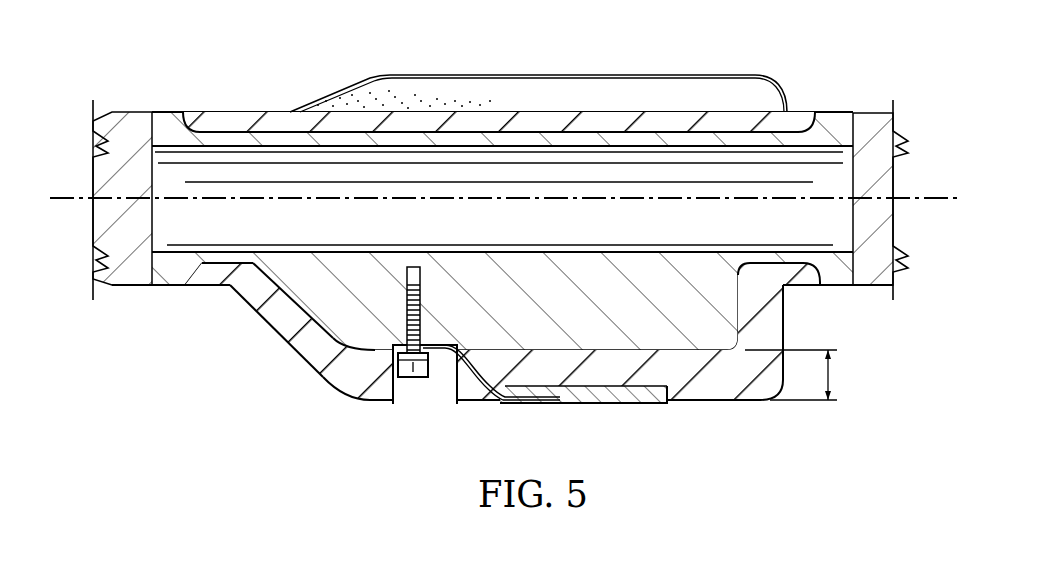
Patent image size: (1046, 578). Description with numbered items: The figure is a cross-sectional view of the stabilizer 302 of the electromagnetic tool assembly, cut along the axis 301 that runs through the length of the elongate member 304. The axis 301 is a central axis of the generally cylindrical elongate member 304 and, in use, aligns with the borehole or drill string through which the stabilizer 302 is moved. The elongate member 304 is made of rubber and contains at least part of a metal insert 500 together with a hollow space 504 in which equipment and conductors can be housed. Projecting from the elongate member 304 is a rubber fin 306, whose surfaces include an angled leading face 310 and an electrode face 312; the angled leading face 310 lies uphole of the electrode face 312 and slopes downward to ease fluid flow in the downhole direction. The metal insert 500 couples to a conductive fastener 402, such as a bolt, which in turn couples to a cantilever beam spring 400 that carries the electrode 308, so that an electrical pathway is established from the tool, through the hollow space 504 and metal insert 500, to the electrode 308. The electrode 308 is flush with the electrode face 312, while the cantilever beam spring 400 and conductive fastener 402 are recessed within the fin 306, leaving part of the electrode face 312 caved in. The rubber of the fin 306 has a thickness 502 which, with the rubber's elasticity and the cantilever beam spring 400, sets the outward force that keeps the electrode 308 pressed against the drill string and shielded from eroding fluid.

The axis 301 is at (74, 196).
The stabilizer 302 is at (182, 362).
The elongate member 304 is at (160, 106).
The fin 306 is at (804, 90).
The electrode 308 is at (582, 405).
The angled leading face 310 is at (280, 345).
The electrode face 312 is at (652, 74).
The cantilever beam spring 400 is at (480, 386).
The conductive fastener 402 is at (420, 378).
The metal insert 500 is at (556, 316).
The thickness 502 is at (837, 383).
The hollow space 504 is at (512, 209).